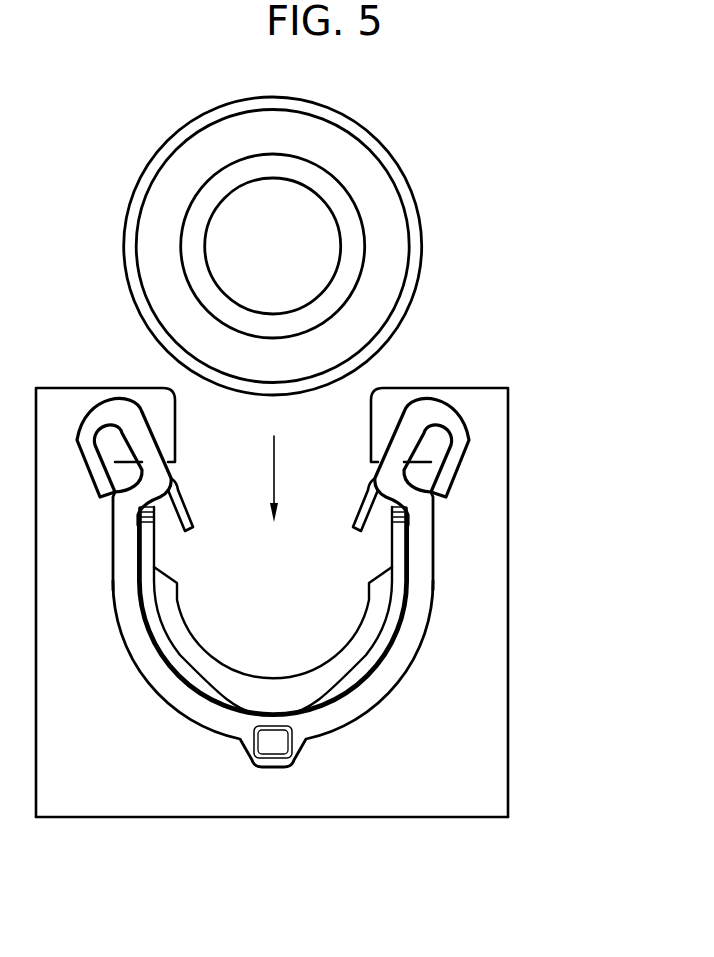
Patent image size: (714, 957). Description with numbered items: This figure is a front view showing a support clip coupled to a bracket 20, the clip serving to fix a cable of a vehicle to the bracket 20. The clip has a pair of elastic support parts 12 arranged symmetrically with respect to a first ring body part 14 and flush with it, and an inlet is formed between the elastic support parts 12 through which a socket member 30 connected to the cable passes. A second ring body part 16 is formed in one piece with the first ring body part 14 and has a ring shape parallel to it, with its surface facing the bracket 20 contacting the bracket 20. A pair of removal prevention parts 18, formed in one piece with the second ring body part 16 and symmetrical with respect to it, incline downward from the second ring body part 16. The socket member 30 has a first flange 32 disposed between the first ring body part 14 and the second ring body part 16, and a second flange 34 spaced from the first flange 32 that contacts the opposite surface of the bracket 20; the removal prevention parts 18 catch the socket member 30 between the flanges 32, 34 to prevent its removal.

The socket member 30 is at (312, 226).
The second flange 34 is at (412, 177).
The first flange 32 is at (407, 218).
The bracket 20 is at (514, 581).
The elastic support parts 12 is at (148, 435).
The first ring body part 14 is at (172, 696).
The second ring body part 16 is at (156, 560).
The removal prevention parts 18 is at (187, 512).